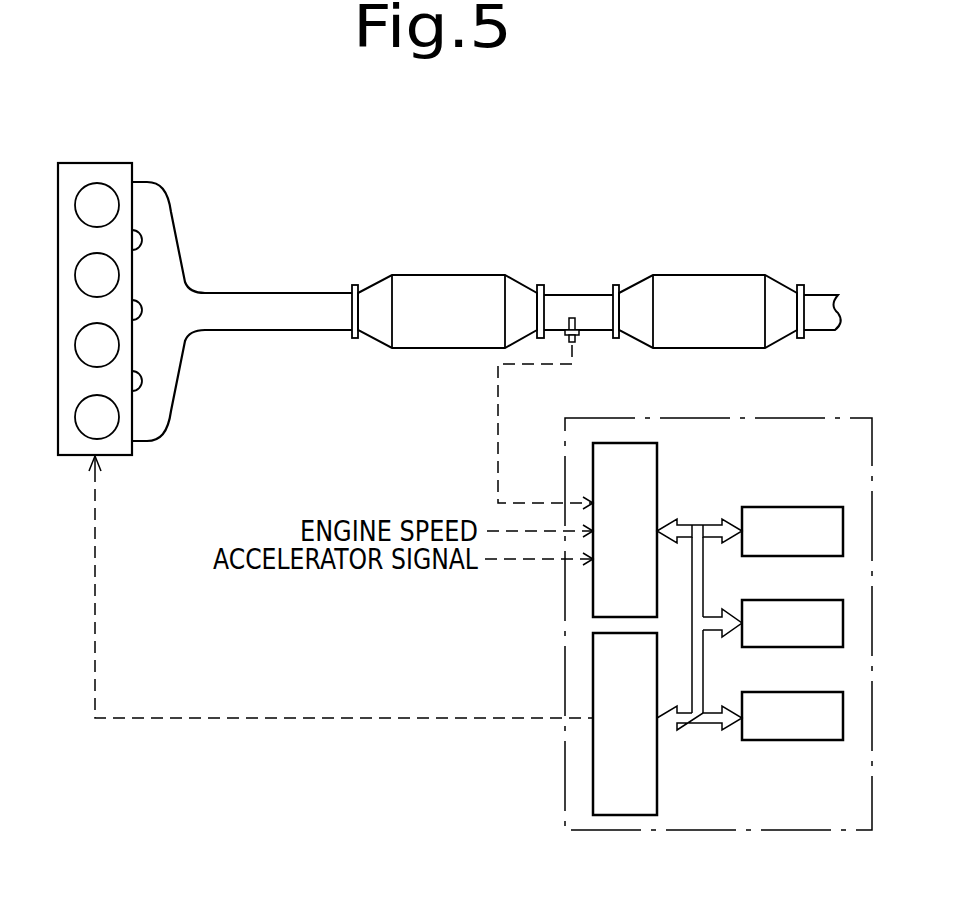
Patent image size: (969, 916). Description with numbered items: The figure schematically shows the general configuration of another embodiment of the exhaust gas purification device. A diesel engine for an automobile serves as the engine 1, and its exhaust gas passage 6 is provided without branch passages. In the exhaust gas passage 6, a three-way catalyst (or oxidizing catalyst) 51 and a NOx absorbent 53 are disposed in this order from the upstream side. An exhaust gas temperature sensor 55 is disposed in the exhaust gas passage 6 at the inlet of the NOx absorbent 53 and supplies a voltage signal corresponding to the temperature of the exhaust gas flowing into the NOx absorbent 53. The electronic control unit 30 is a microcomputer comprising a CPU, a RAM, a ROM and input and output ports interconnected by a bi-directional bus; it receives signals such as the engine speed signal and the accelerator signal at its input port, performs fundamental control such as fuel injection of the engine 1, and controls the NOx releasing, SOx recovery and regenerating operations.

The engine 1 is at (100, 163).
The exhaust gas passage 6 is at (284, 293).
The three-way catalyst 51 is at (441, 280).
The NOx absorbent 53 is at (708, 280).
The exhaust gas temperature sensor 55 is at (578, 338).
The electronic control unit 30 is at (827, 830).